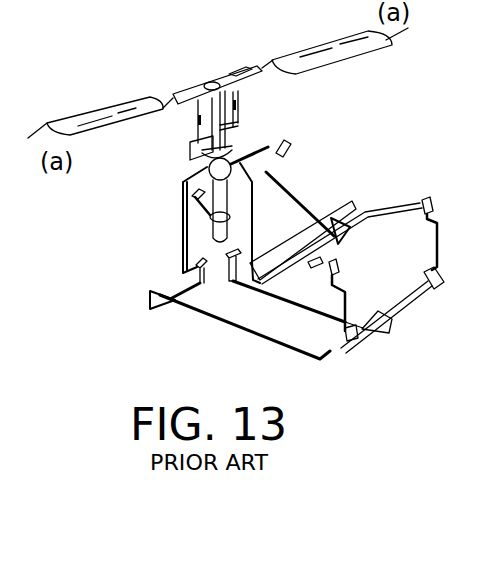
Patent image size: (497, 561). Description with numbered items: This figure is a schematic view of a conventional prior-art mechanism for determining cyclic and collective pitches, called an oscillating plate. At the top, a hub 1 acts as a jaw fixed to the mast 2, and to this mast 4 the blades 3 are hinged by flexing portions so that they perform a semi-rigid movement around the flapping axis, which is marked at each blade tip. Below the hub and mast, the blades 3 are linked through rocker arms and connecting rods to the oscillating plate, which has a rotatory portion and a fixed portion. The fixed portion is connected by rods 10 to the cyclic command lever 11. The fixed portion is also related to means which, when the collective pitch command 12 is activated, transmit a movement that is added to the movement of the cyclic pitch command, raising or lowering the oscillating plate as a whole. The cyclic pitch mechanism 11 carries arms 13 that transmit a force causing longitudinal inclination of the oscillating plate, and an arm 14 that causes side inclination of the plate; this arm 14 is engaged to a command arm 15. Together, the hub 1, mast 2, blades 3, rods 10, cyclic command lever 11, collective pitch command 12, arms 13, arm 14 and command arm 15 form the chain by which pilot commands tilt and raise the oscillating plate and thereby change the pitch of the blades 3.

The hub 1 is at (196, 93).
The mast 2 is at (237, 128).
The blades 3 is at (79, 118).
The mast 4 is at (221, 73).
The rods 10 is at (182, 250).
The cyclic command lever 11 is at (441, 247).
The collective pitch command 12 is at (363, 213).
The arms 13 is at (252, 288).
The arm 14 is at (280, 341).
The command arm 15 is at (341, 352).